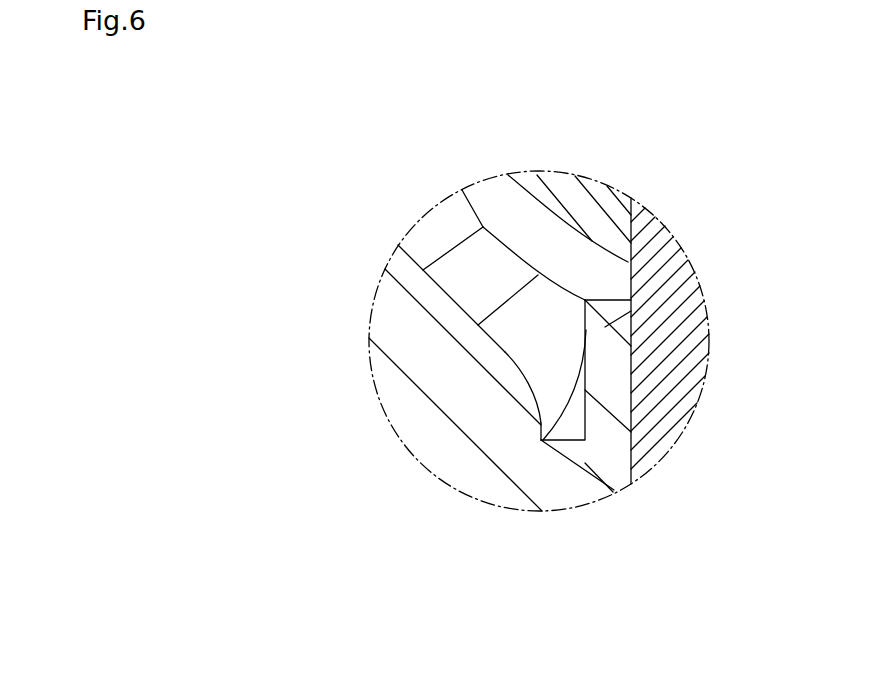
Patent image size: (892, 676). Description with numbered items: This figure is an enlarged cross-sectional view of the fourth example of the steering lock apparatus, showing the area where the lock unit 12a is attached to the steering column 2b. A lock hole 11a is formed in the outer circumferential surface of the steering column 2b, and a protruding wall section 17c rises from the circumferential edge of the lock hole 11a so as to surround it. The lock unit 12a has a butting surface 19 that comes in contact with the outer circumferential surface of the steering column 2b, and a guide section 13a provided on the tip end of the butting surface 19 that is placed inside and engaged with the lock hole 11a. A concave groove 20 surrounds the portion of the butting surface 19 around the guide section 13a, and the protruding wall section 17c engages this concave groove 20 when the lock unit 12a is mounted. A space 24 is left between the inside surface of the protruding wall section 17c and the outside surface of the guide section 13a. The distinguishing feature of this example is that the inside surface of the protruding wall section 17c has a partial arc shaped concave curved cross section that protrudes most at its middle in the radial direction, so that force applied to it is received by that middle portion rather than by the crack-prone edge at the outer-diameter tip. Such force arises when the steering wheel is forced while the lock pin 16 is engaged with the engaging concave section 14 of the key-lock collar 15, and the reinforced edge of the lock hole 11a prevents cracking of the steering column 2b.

The steering column 2b is at (443, 227).
The butting surface 19 is at (419, 270).
The key-lock collar 15 is at (553, 195).
The lock hole 11a is at (587, 299).
The engaging concave section 14 is at (634, 236).
The guide section 13a is at (620, 318).
The lock unit 12a is at (422, 398).
The protruding wall section 17c is at (546, 372).
The concave groove 20 is at (553, 436).
The space 24 is at (573, 426).
The lock pin 16 is at (667, 437).